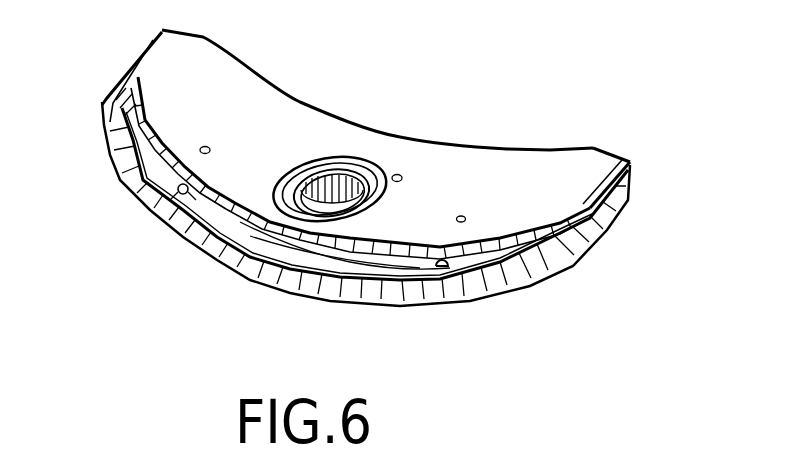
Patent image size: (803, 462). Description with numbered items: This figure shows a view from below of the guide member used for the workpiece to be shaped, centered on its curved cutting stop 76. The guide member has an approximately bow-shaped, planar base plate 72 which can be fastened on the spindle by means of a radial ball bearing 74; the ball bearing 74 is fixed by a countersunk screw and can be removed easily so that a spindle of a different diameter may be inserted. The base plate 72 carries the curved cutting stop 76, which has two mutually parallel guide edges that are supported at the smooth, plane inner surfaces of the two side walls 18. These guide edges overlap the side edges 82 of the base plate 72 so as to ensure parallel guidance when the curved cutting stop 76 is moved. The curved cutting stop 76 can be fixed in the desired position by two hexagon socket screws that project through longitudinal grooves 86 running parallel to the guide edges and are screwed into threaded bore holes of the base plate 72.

The base plate 72 is at (250, 82).
The radial ball bearing 74 is at (347, 165).
The curved cutting stop 76 is at (480, 288).
The side walls 18 is at (607, 217).
The side edges 82 is at (632, 162).
The longitudinal grooves 86 is at (180, 192).